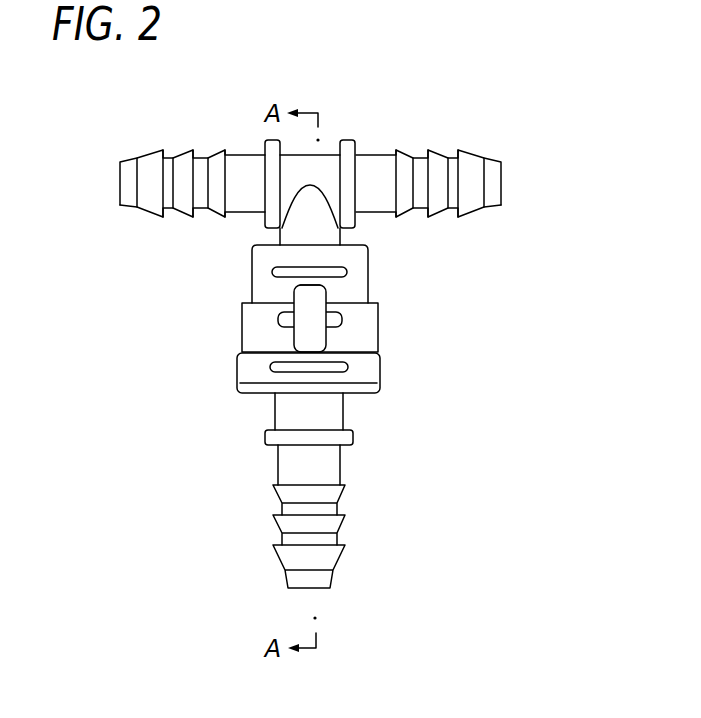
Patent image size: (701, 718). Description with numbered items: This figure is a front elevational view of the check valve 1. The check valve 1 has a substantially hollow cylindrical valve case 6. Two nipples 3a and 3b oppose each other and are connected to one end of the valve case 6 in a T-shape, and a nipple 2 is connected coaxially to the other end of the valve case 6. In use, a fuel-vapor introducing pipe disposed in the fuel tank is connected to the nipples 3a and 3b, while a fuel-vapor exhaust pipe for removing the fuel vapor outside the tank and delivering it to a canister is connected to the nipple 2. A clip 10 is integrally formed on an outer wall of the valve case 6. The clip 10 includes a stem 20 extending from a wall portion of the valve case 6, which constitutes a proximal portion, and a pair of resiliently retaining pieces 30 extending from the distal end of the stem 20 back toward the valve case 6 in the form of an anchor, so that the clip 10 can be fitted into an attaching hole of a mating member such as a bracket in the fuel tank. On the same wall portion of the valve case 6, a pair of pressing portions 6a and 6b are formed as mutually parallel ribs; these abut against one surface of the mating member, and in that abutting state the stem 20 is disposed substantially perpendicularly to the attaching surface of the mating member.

The check valve 1 is at (496, 261).
The nipple 2 is at (333, 465).
The nipple 3a is at (203, 157).
The nipple 3b is at (377, 158).
The valve case 6 is at (353, 345).
The pressing portion 6a is at (348, 367).
The pressing portion 6b is at (347, 275).
The clip 10 is at (340, 333).
The stem 20 is at (340, 320).
The resiliently retaining pieces 30 is at (303, 348).